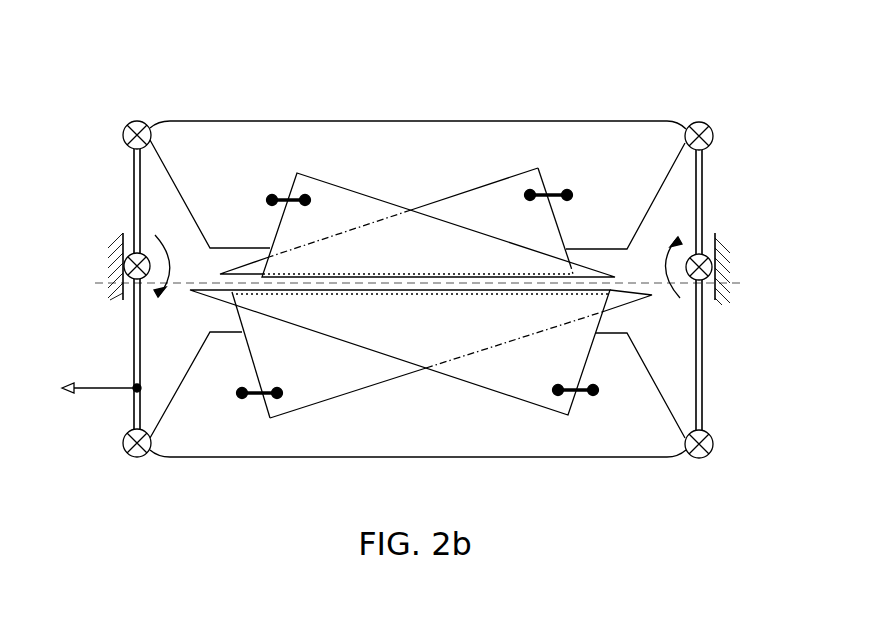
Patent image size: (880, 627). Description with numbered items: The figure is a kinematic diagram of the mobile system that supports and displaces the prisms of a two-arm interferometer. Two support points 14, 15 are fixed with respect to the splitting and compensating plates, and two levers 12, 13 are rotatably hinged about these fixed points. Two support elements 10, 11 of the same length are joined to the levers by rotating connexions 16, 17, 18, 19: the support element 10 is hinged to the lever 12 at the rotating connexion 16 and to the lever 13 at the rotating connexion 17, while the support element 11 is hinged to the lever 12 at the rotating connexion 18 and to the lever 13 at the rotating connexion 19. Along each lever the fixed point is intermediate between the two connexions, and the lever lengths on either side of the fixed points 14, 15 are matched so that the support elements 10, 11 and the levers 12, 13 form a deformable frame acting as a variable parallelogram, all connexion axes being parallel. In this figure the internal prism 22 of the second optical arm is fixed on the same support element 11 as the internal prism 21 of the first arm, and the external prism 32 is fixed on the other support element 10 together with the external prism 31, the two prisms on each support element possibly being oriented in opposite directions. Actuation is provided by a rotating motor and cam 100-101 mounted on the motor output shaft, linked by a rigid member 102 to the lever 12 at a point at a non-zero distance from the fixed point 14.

The support element 10 is at (241, 140).
The support element 11 is at (405, 437).
The lever 12 is at (130, 188).
The lever 13 is at (708, 188).
The support point 14 is at (97, 247).
The support point 15 is at (742, 246).
The rotating connexion 16 is at (133, 121).
The rotating connexion 17 is at (705, 122).
The rotating connexion 18 is at (137, 457).
The rotating connexion 19 is at (705, 458).
The external prism 31 is at (337, 215).
The external prism 32 is at (500, 215).
The internal prism 21 is at (525, 365).
The internal prism 22 is at (315, 365).
The rotating motor and cam 100-101 is at (85, 390).
The rigid member 102 is at (102, 392).